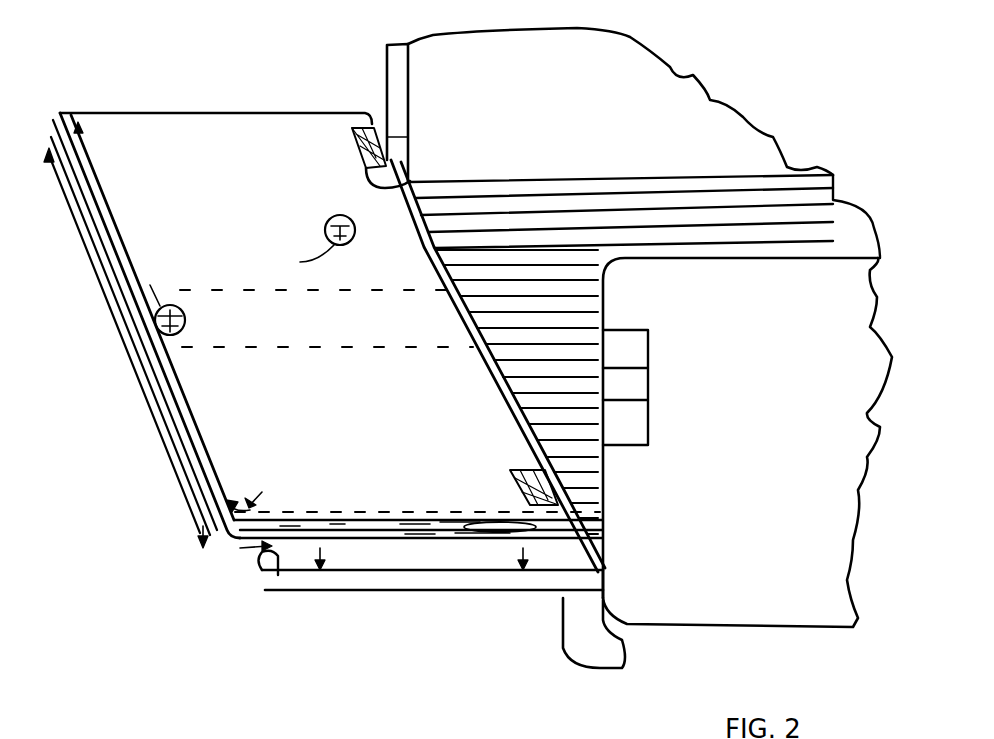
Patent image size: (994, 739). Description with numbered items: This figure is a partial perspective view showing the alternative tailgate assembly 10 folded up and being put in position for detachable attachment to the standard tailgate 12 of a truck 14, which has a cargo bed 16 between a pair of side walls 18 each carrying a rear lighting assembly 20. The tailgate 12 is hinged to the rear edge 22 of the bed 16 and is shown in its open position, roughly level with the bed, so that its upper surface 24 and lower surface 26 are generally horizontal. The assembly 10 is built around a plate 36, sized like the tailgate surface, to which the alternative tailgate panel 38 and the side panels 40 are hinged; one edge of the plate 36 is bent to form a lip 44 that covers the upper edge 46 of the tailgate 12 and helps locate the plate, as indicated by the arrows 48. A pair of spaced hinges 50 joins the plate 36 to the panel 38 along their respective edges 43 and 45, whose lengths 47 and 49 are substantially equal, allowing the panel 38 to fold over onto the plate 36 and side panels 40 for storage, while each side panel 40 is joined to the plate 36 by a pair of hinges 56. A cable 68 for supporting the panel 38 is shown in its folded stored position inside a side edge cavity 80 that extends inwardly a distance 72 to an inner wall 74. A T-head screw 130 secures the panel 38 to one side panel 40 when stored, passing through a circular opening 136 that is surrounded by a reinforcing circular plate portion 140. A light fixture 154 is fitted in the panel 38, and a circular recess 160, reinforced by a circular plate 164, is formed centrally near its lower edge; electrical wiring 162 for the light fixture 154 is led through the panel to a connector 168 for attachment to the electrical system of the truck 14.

The tailgate assembly 10 is at (252, 96).
The tailgate 12 is at (385, 590).
The truck 14 is at (377, 78).
The cargo bed 16 is at (840, 205).
The side wall 18 is at (586, 93).
The rear lighting assembly 20 is at (640, 395).
The rear edge 22 is at (512, 392).
The upper surface 24 is at (270, 580).
The lower surface 26 is at (490, 600).
The plate 36 is at (412, 572).
The alternative tailgate panel 38 is at (233, 524).
The side panel 40 is at (107, 282).
The edge 43 is at (95, 262).
The lip 44 is at (215, 546).
The edge 45 is at (92, 205).
The upper edge 46 is at (250, 550).
The length 47 is at (162, 440).
The arrows 48 is at (246, 548).
The length 49 is at (195, 410).
The hinges 50 is at (85, 163).
The hinges 56 is at (330, 530).
The cable 68 is at (415, 535).
The distance 72 is at (262, 492).
The inner wall 74 is at (420, 512).
The cavity 80 is at (565, 527).
The screw 130 is at (326, 254).
The circular opening 136 is at (287, 264).
The reinforcing circular plate portion 140 is at (328, 220).
The light fixture 154 is at (408, 137).
The circular recess 160 is at (352, 140).
The electrical wiring 162 is at (352, 128).
The circular plate 164 is at (160, 262).
The connector 168 is at (186, 322).